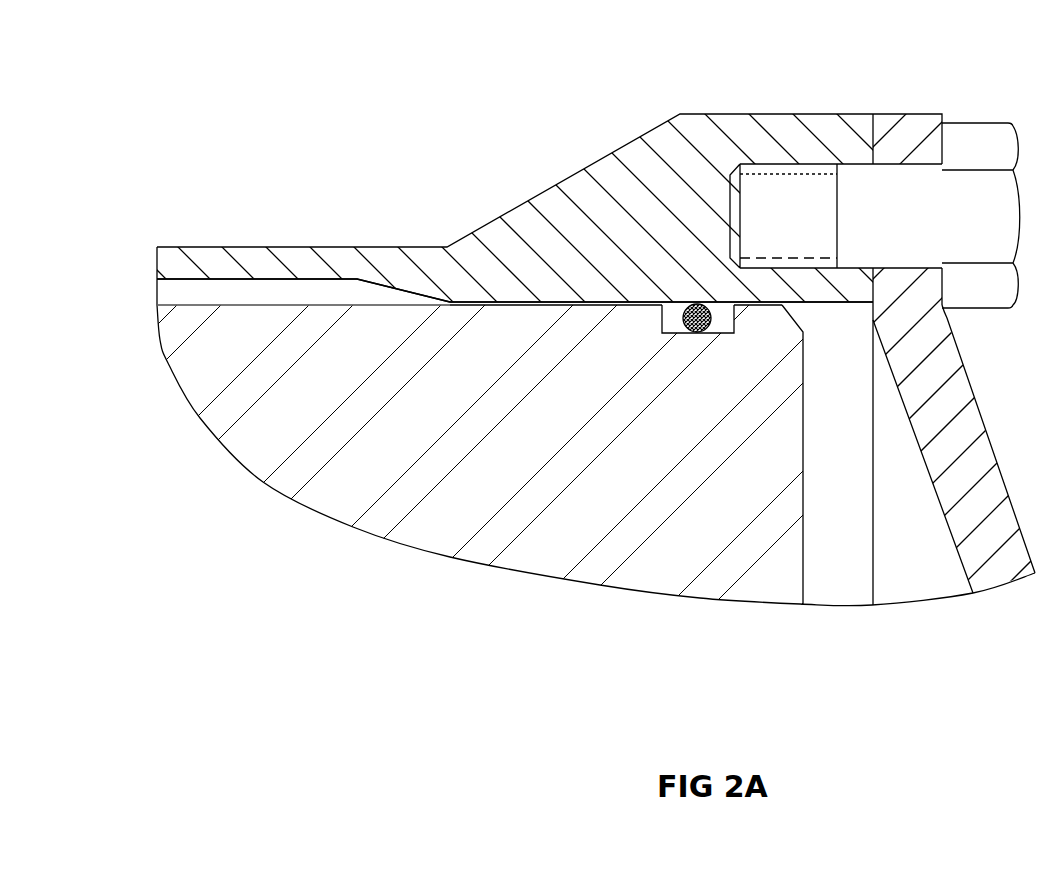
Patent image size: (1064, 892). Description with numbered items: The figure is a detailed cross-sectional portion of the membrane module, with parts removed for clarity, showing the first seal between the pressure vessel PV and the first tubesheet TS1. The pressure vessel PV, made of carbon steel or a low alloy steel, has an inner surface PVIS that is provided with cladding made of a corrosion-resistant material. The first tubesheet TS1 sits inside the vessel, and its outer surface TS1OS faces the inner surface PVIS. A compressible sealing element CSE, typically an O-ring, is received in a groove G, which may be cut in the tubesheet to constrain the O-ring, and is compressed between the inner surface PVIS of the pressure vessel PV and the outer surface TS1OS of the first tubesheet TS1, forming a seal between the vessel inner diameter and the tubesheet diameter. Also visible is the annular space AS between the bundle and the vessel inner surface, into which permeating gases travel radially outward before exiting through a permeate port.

The pressure vessel PV is at (498, 250).
The inner surface of the pressure vessel PVIS is at (670, 303).
The annular space AS is at (225, 295).
The first tubesheet TS1 is at (266, 430).
The outer surface of the first tubesheet TS1OS is at (593, 305).
The groove G is at (678, 323).
The compressible sealing element CSE is at (695, 332).